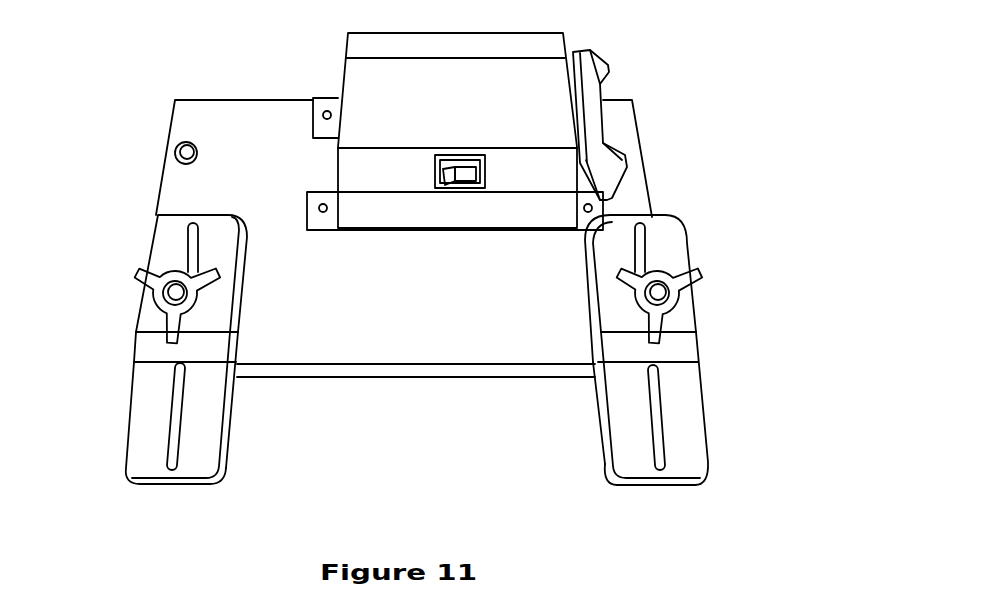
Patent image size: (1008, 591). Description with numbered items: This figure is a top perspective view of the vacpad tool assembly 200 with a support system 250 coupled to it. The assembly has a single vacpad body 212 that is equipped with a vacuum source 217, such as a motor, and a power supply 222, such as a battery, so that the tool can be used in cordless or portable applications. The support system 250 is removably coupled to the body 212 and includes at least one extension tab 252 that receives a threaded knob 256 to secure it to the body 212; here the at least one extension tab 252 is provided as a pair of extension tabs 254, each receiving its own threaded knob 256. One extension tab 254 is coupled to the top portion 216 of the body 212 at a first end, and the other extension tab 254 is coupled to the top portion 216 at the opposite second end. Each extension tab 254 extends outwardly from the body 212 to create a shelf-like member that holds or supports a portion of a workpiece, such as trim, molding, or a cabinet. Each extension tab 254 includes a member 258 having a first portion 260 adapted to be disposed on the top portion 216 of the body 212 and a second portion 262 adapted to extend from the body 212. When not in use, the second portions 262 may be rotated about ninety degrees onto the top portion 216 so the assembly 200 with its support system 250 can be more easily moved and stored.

The vacpad tool assembly 200 is at (798, 102).
The vacpad body 212 is at (225, 98).
The top portion 216 is at (448, 343).
The vacuum source 217 is at (482, 103).
The power supply 222 is at (598, 53).
The support system 250 is at (108, 293).
The extension tab 252 is at (707, 440).
The extension tabs 254 is at (142, 408).
The threaded knob 256 is at (163, 267).
The member 258 is at (125, 430).
The first portion 260 is at (163, 217).
The second portion 262 is at (203, 467).